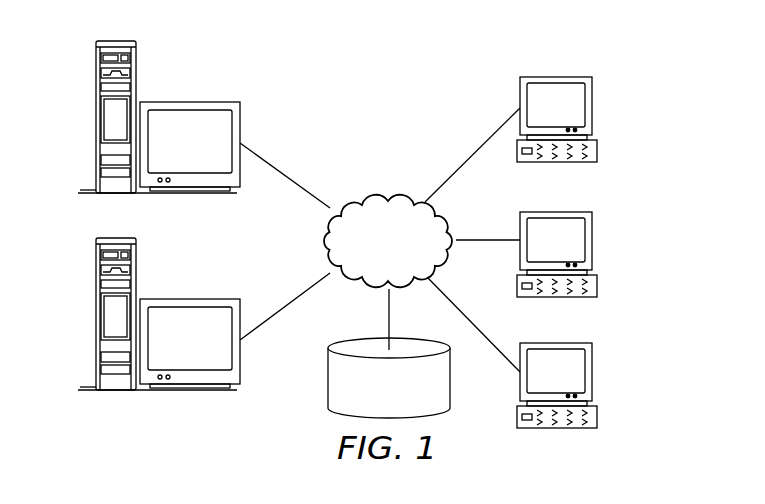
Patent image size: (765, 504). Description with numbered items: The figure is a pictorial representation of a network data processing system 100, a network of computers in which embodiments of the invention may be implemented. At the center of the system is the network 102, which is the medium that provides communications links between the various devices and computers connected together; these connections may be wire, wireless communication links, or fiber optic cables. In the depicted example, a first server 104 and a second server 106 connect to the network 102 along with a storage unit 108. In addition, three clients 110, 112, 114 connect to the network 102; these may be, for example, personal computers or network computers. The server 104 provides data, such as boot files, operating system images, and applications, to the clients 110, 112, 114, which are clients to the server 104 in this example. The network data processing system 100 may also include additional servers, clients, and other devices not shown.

The network data processing system 100 is at (433, 90).
The network 102 is at (362, 193).
The server 104 is at (95, 117).
The server 106 is at (95, 318).
The storage unit 108 is at (327, 387).
The client 110 is at (592, 105).
The client 112 is at (592, 228).
The client 114 is at (592, 372).